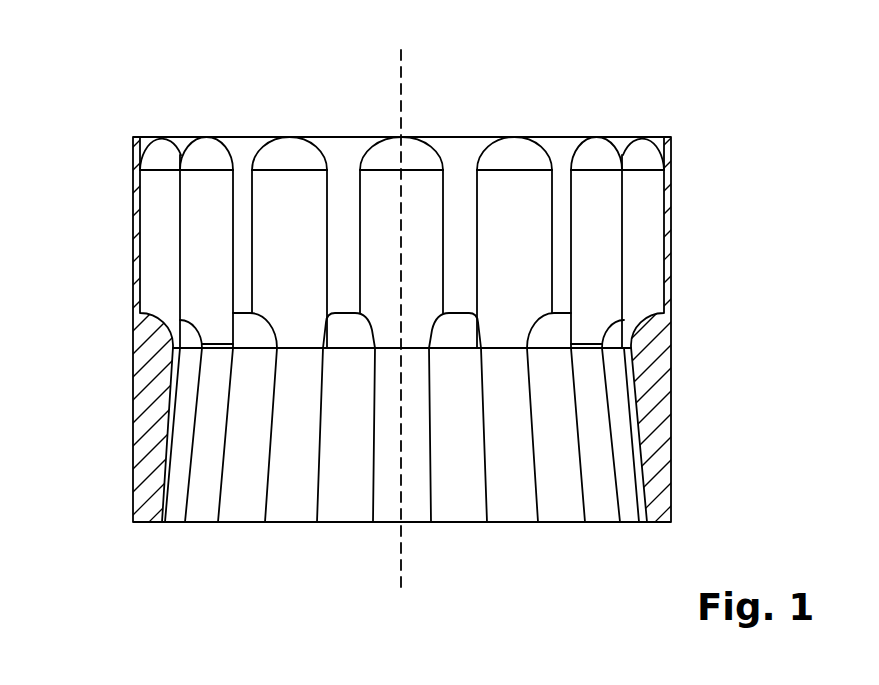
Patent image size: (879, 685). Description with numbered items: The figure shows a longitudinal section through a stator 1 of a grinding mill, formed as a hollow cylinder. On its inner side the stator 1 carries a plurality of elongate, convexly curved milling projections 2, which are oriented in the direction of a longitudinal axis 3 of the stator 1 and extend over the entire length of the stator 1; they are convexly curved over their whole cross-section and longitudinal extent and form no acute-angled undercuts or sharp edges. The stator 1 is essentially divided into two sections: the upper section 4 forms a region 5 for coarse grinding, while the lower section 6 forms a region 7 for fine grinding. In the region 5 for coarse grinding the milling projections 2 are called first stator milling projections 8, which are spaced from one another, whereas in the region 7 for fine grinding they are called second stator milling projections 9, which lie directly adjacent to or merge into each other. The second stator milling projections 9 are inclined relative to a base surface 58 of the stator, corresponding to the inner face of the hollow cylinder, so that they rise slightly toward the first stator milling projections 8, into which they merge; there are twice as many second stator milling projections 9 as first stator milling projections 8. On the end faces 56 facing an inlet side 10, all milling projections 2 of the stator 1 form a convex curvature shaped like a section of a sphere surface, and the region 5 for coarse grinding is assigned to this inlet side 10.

The stator 1 is at (106, 277).
The inlet side 10 is at (216, 106).
The milling projections 2 is at (379, 191).
The longitudinal axis 3 is at (402, 563).
The upper section 4 is at (549, 240).
The region for coarse grinding 5 is at (588, 190).
The end faces 56 is at (530, 155).
The base surface 58 is at (670, 185).
The lower section 6 is at (535, 417).
The region for fine grinding 7 is at (558, 490).
The first stator milling projections 8 is at (432, 183).
The second stator milling projections 9 is at (453, 503).